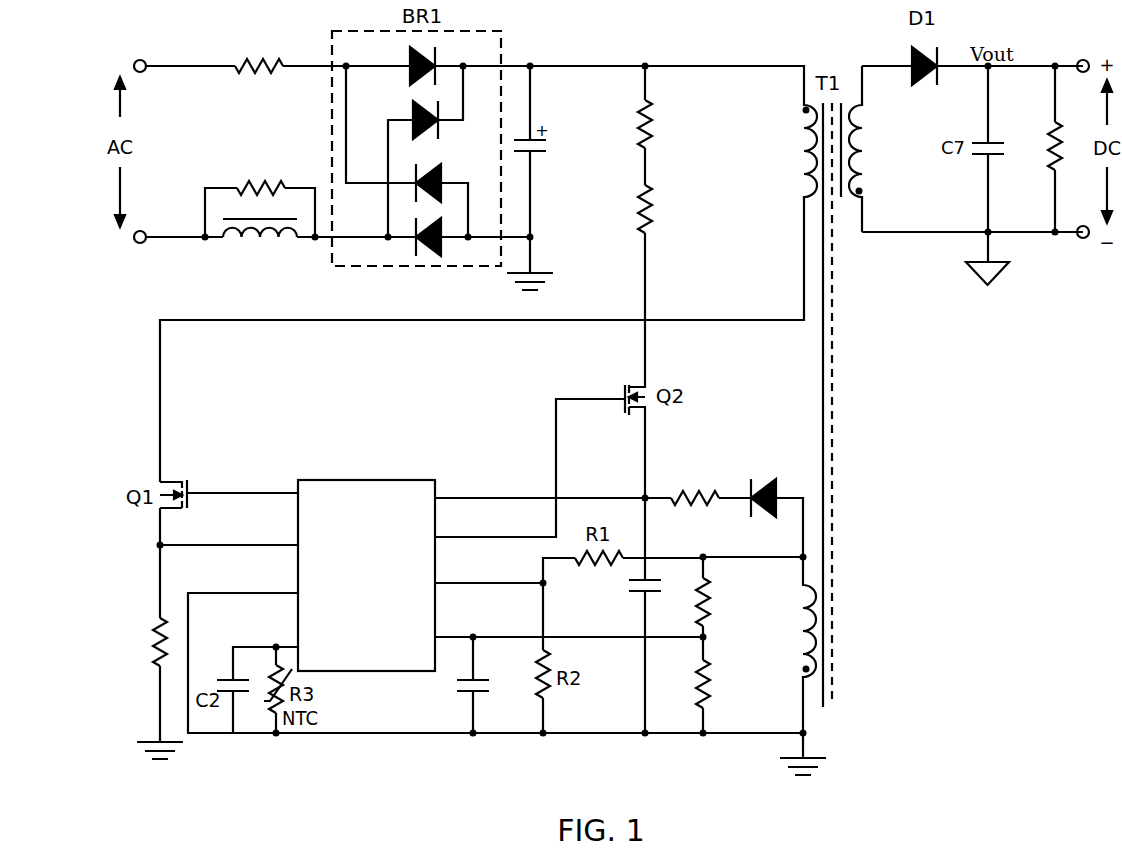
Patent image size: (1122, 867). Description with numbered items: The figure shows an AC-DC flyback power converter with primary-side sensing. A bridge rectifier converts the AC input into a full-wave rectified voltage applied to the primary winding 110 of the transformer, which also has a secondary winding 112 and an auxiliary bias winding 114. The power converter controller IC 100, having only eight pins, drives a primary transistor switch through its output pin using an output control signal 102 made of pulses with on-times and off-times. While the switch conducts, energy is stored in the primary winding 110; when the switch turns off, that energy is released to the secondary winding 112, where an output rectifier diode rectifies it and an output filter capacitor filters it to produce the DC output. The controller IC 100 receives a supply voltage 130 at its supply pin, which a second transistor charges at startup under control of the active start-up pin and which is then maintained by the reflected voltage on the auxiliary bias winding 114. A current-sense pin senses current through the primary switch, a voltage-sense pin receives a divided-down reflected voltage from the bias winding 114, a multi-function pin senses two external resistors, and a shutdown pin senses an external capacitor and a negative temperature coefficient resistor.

The power converter controller IC 100 is at (378, 480).
The output control signal 102 is at (237, 491).
The primary winding 110 is at (795, 157).
The secondary winding 112 is at (868, 160).
The auxiliary bias winding 114 is at (886, 645).
The supply voltage 130 is at (535, 498).